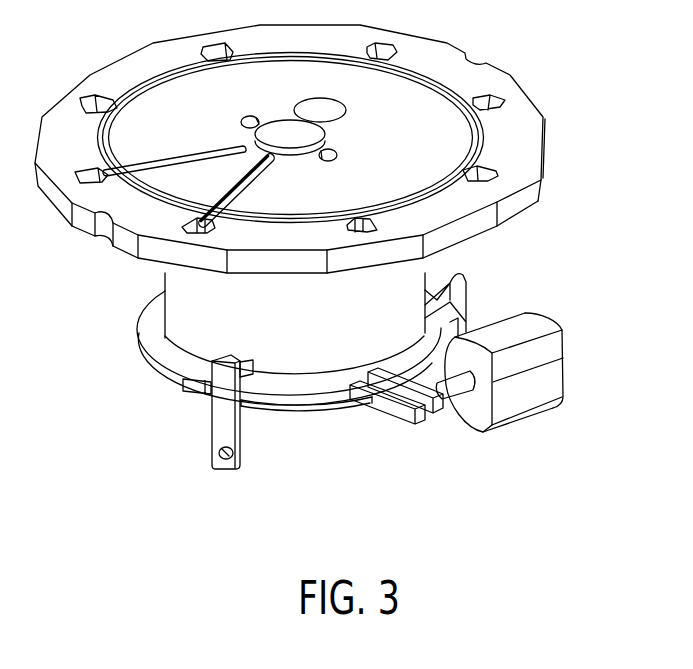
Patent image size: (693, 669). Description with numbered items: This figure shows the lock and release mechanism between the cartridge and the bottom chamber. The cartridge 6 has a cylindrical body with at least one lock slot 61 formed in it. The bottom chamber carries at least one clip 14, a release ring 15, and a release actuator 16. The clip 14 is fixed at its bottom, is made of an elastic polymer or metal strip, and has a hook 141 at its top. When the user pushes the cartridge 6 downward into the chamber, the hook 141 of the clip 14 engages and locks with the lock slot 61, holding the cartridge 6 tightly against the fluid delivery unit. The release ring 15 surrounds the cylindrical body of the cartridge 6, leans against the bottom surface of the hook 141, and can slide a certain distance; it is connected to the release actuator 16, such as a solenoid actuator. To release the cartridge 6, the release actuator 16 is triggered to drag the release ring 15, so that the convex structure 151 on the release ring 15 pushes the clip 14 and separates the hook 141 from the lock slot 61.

The cartridge 6 is at (480, 82).
The lock slot 61 is at (237, 357).
The clip 14 is at (227, 422).
The hook 141 is at (245, 375).
The release ring 15 is at (347, 393).
The convex structure 151 is at (208, 386).
The release actuator 16 is at (543, 376).